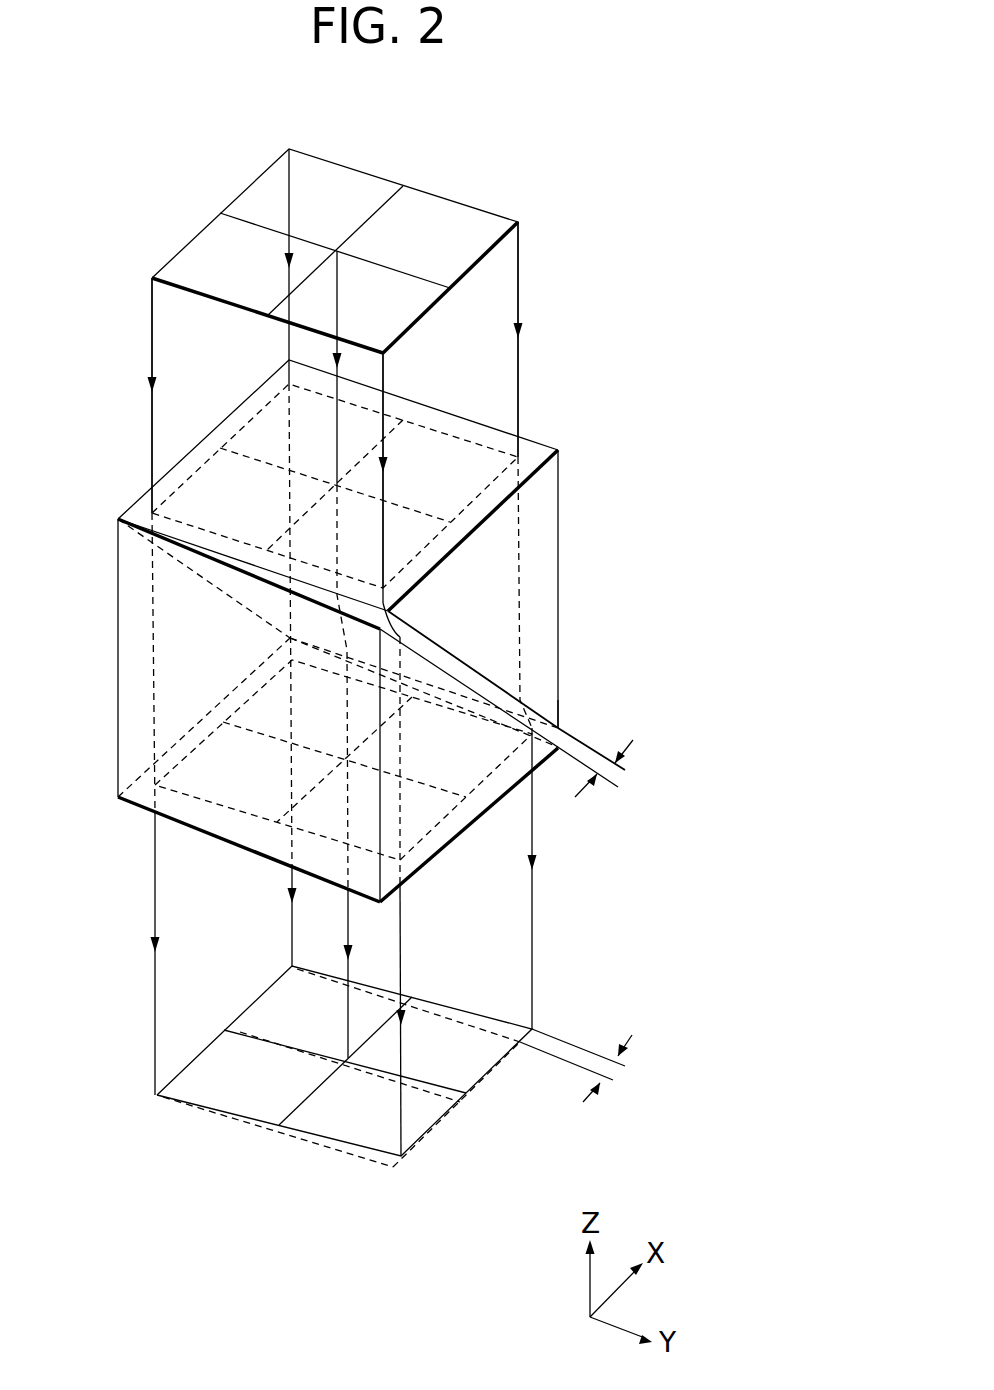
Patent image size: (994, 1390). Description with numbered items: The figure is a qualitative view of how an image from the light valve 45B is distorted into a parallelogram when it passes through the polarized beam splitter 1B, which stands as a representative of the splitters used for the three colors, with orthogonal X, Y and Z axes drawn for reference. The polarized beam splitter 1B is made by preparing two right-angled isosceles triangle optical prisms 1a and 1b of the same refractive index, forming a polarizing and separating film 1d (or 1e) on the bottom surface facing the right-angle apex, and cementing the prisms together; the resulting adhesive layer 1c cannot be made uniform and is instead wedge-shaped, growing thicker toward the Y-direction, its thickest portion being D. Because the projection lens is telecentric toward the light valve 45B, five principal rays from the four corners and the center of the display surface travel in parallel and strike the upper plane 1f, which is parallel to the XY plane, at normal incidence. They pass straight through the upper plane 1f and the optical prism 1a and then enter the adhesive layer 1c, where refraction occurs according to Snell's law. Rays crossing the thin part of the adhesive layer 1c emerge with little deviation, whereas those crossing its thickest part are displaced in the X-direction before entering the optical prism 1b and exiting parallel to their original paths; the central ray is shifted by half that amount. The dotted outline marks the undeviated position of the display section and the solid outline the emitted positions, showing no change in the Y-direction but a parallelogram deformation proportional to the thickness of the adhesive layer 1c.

The light valve 45B is at (465, 208).
The polarized beam splitter 1B is at (404, 618).
The optical prism 1a is at (550, 542).
The optical prism 1b is at (492, 787).
The adhesive layer 1c is at (560, 728).
The polarizing and separating film 1d is at (448, 658).
The polarizing and separating film 1e is at (472, 680).
The upper plane 1f is at (533, 448).
The thickest portion of the wedge shape D is at (620, 778).